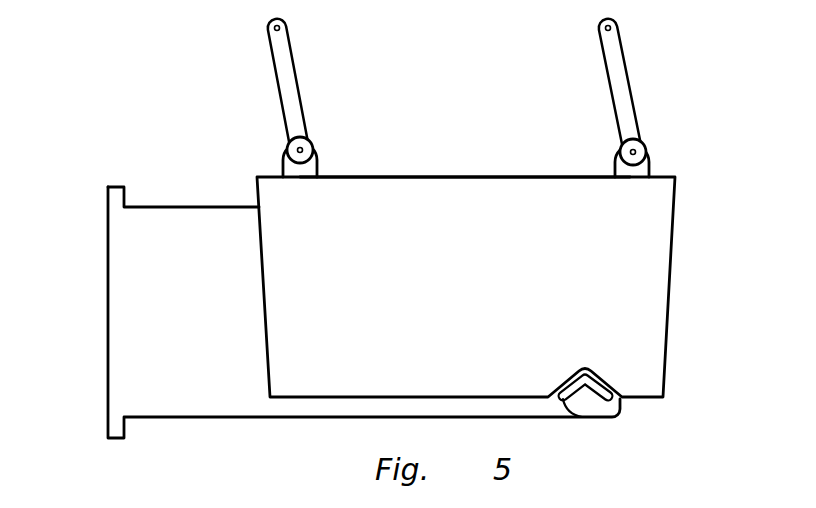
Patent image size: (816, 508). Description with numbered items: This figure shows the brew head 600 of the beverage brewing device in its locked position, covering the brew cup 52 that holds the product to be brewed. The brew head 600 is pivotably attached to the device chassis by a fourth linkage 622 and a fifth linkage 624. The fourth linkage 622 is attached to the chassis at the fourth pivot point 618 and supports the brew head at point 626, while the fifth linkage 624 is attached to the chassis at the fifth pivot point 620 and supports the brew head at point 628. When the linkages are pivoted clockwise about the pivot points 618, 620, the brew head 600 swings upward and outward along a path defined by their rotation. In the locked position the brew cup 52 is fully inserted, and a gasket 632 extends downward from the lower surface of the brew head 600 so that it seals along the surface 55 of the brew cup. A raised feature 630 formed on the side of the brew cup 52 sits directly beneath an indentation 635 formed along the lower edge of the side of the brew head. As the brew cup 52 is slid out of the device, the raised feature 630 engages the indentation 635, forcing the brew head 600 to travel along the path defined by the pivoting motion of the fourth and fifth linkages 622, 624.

The brew cup 52 is at (224, 377).
The surface of the brew cup 55 is at (162, 204).
The brew head 600 is at (652, 391).
The fourth pivot point 618 is at (283, 27).
The fifth pivot point 620 is at (602, 28).
The fourth linkage 622 is at (281, 54).
The fifth linkage 624 is at (617, 43).
The support point 626 is at (311, 148).
The support point 628 is at (643, 147).
The raised feature 630 is at (588, 420).
The gasket 632 is at (448, 187).
The indentation 635 is at (620, 405).